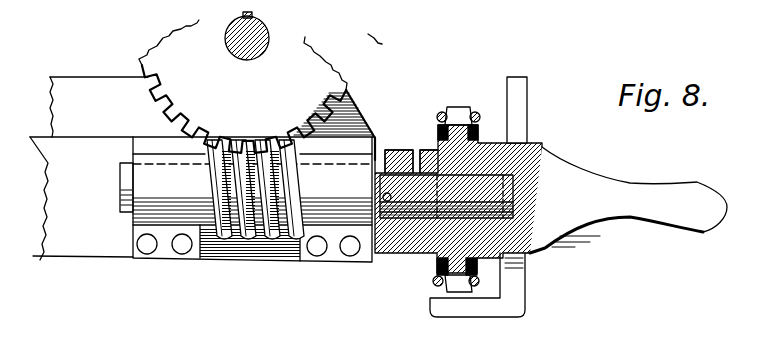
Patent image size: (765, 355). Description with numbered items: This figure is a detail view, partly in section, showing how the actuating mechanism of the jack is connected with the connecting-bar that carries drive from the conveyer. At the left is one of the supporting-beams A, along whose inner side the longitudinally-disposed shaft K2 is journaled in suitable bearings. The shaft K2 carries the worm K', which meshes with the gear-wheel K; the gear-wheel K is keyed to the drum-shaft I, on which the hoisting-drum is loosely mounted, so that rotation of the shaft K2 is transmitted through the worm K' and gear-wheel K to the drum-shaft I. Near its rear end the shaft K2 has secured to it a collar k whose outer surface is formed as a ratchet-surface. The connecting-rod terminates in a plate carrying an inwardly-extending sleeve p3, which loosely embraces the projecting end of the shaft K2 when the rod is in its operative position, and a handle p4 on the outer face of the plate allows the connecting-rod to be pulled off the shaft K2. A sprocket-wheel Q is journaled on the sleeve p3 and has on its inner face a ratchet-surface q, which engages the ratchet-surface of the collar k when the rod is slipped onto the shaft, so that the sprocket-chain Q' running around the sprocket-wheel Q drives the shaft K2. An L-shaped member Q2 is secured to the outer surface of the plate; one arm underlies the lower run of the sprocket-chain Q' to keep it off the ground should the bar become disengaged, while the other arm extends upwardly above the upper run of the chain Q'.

The supporting-beam A is at (202, 168).
The gear-wheel K is at (260, 90).
The worm K' is at (252, 212).
The shaft K2 is at (124, 188).
The drum-shaft I is at (259, 50).
The collar k is at (393, 148).
The ratchet-surface q is at (421, 150).
The sprocket-wheel Q is at (464, 113).
The sprocket-chain Q' is at (493, 185).
The L-shaped member Q2 is at (527, 97).
The sleeve p3 is at (436, 249).
The handle p4 is at (551, 199).